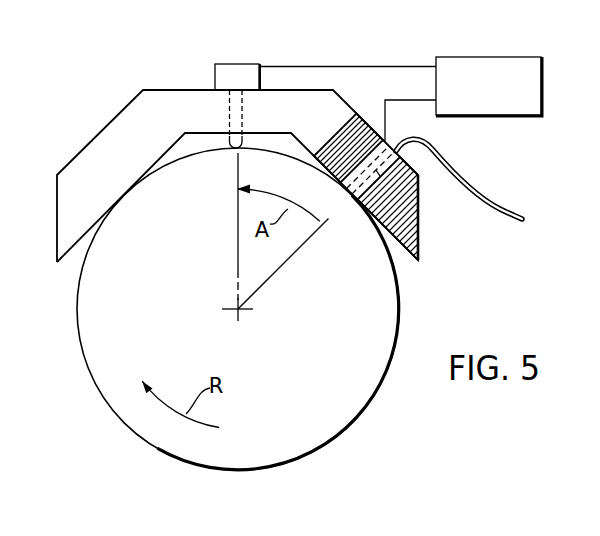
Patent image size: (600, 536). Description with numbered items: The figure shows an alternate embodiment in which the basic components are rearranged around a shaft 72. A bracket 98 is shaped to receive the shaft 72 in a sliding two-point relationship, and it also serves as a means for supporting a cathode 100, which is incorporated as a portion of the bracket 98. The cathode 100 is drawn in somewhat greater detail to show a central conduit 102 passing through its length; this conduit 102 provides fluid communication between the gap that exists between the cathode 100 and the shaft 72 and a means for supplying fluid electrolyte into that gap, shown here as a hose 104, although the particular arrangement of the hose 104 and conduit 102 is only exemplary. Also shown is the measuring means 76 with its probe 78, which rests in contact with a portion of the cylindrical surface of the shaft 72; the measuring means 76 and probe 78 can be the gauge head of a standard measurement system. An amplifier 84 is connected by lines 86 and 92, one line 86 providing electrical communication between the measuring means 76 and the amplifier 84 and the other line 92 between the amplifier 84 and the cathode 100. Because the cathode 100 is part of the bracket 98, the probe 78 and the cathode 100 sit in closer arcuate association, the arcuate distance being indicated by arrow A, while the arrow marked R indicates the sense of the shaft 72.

The shaft 72 is at (366, 408).
The measuring means 76 is at (218, 64).
The probe 78 is at (230, 141).
The amplifier 84 is at (457, 57).
The line 86 is at (348, 66).
The line 92 is at (423, 100).
The bracket 98 is at (97, 137).
The cathode 100 is at (418, 216).
The central conduit 102 is at (417, 266).
The hose 104 is at (503, 207).